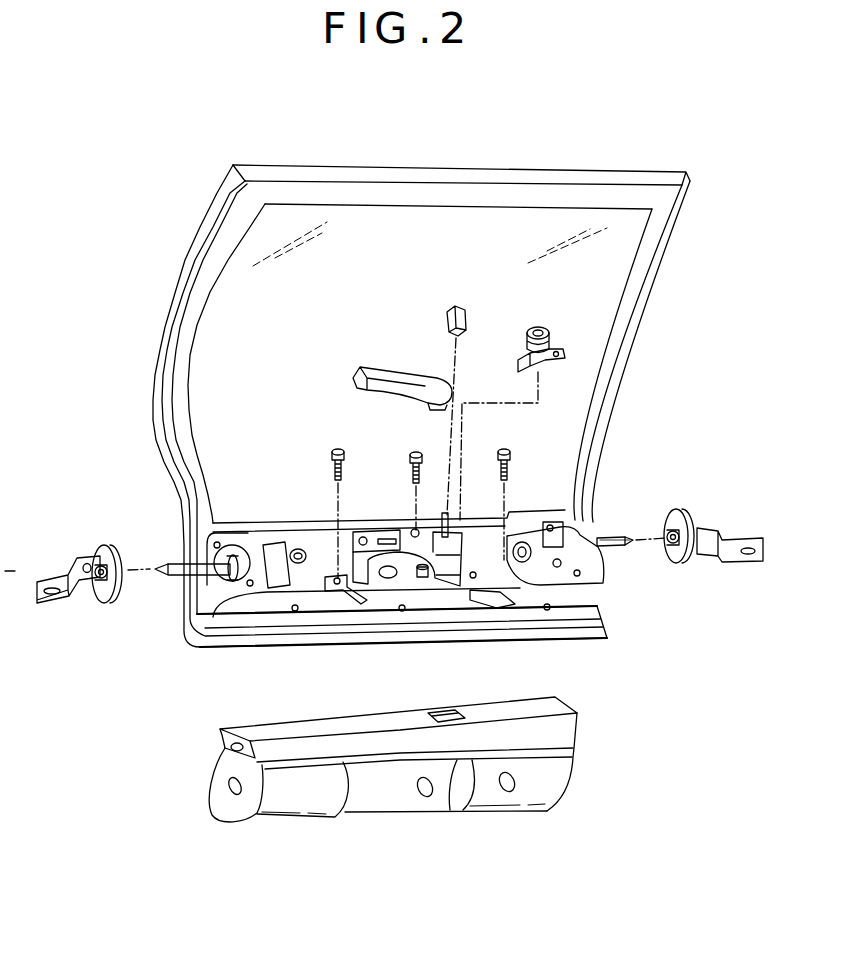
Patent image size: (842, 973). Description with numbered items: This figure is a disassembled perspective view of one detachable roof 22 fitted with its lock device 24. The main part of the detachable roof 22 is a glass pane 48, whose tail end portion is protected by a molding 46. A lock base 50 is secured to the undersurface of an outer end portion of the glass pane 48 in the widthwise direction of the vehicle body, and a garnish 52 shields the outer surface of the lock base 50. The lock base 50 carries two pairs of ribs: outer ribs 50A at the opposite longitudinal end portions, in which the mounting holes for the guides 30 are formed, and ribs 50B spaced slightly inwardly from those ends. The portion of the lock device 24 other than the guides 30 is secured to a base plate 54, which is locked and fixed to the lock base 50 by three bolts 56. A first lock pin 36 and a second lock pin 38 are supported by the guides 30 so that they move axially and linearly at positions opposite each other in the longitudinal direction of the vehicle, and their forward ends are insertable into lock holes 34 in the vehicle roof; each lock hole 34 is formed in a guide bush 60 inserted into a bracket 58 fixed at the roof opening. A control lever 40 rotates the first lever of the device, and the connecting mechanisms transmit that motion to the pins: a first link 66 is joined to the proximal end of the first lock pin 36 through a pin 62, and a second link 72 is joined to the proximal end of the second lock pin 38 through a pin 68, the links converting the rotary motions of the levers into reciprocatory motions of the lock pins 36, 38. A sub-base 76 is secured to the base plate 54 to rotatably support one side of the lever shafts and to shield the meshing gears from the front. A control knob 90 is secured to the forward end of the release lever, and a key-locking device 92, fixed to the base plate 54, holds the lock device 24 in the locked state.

The detachable roof 22 is at (150, 390).
The lock device 24 is at (383, 519).
The guide 30 is at (228, 578).
The lock hole 34 is at (97, 560).
The first lock pin 36 is at (620, 542).
The second lock pin 38 is at (172, 560).
The control lever 40 is at (367, 368).
The molding 46 is at (548, 172).
The glass pane 48 is at (617, 273).
The lock base 50 is at (430, 533).
The outer rib 50A is at (240, 535).
The inner rib 50B is at (278, 546).
The garnish 52 is at (568, 768).
The base plate 54 is at (444, 598).
The bolt 56 is at (336, 450).
The bracket 58 is at (56, 600).
The guide bush 60 is at (104, 603).
The pin 62 is at (513, 560).
The first link 66 is at (487, 596).
The pin 68 is at (297, 535).
The second link 72 is at (318, 575).
The sub-base 76 is at (377, 586).
The control knob 90 is at (466, 316).
The key-locking device 92 is at (527, 337).